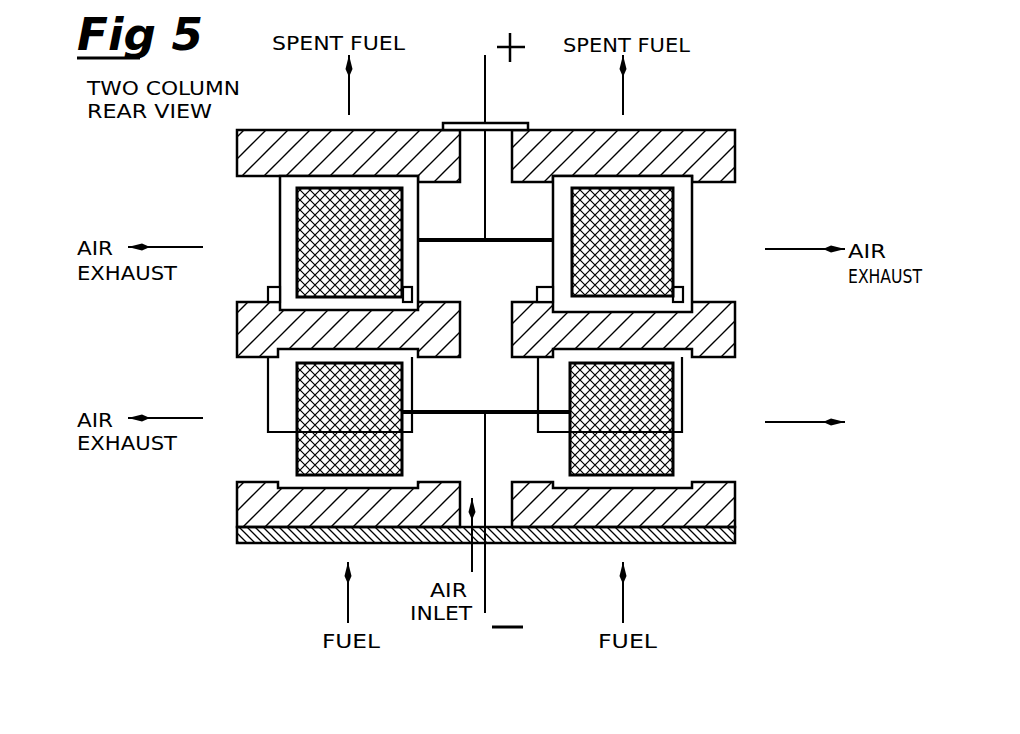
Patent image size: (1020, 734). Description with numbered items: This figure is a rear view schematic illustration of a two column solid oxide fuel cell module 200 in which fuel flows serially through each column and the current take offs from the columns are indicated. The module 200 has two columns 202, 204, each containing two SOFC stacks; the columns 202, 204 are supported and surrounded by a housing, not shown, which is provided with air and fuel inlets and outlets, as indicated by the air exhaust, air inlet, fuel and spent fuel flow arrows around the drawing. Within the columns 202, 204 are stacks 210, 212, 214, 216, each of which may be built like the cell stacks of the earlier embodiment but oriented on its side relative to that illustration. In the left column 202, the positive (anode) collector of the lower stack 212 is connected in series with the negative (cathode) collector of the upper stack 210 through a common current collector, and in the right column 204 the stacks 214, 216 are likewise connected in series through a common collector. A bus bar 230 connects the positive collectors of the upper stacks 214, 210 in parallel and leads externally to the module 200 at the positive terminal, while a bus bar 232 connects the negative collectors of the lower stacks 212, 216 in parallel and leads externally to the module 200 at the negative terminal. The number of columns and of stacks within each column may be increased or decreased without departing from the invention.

The two column SOFC module 200 is at (757, 107).
The column 202 is at (280, 206).
The column 204 is at (692, 208).
The stack 210 is at (312, 273).
The stack 212 is at (315, 448).
The stack 214 is at (657, 268).
The stack 216 is at (657, 450).
The bus bar 230 is at (518, 243).
The bus bar 232 is at (443, 410).